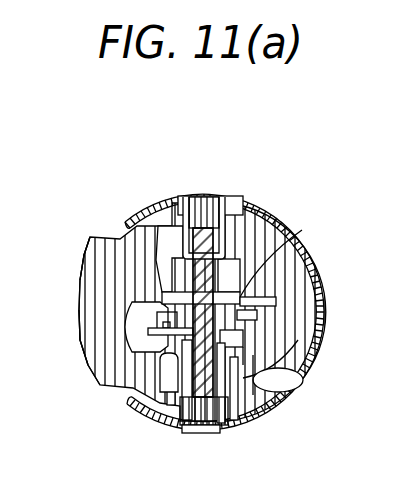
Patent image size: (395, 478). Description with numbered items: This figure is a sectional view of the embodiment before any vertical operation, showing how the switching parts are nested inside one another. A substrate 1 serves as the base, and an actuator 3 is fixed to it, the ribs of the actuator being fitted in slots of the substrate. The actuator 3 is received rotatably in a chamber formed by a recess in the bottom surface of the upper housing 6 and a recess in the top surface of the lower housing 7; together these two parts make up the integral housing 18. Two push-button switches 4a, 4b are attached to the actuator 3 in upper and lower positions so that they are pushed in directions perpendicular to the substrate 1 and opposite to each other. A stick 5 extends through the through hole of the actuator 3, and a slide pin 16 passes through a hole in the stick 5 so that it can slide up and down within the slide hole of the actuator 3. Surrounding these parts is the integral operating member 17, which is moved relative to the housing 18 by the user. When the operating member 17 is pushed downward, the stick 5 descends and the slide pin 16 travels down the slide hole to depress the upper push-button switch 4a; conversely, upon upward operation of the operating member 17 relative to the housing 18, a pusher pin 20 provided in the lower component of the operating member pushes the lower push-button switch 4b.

The substrate 1 is at (253, 333).
The actuator 3 is at (228, 282).
The push-button switch 4a is at (160, 320).
The push-button switch 4b is at (308, 355).
The stick 5 is at (245, 215).
The upper housing 6 is at (88, 268).
The lower housing 7 is at (84, 322).
The slide pin 16 is at (237, 300).
The operating member 17 is at (239, 200).
The housing 18 is at (47, 258).
The pusher pin 20 is at (282, 405).